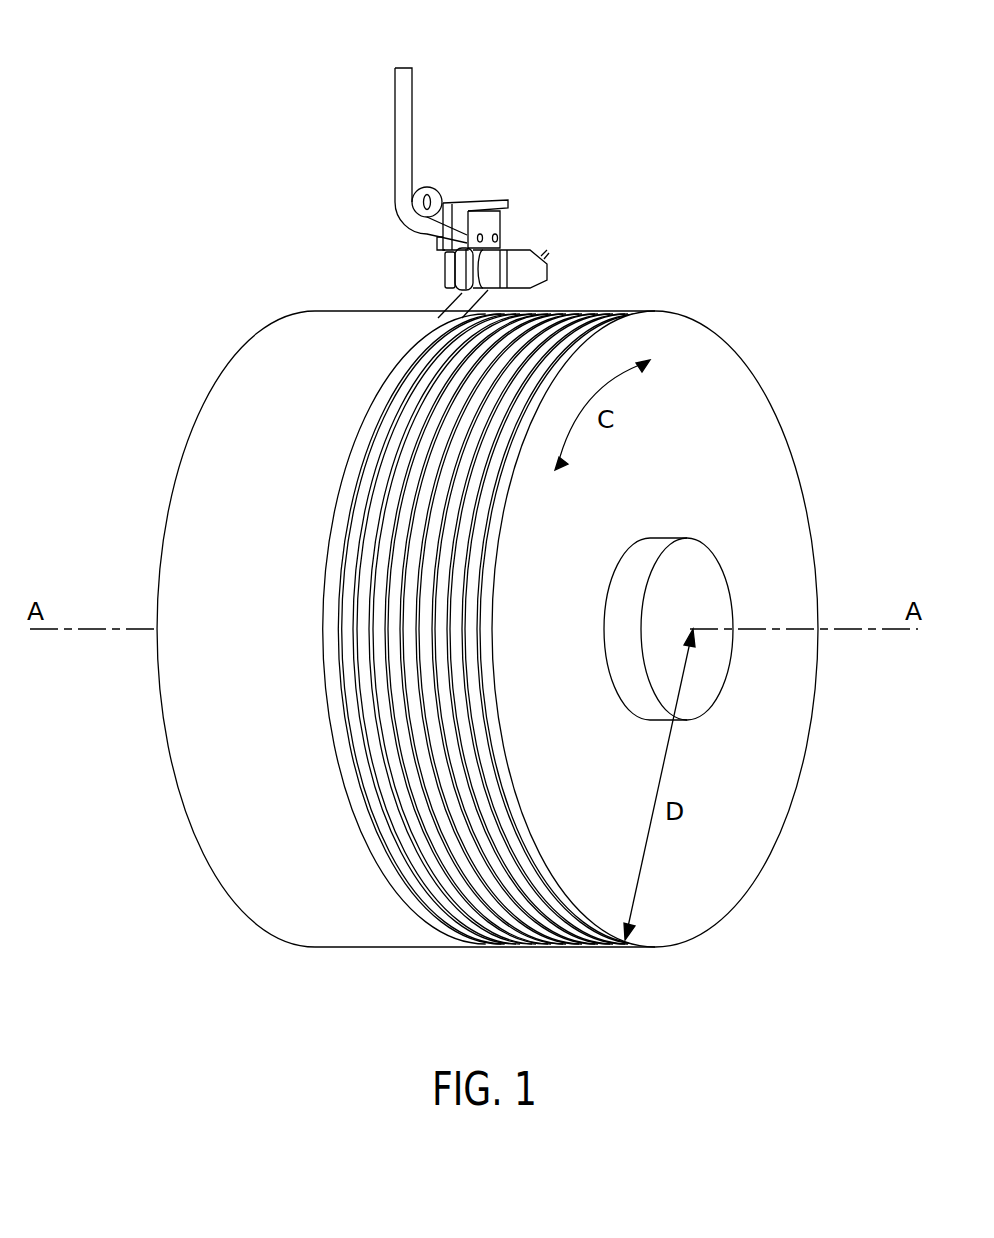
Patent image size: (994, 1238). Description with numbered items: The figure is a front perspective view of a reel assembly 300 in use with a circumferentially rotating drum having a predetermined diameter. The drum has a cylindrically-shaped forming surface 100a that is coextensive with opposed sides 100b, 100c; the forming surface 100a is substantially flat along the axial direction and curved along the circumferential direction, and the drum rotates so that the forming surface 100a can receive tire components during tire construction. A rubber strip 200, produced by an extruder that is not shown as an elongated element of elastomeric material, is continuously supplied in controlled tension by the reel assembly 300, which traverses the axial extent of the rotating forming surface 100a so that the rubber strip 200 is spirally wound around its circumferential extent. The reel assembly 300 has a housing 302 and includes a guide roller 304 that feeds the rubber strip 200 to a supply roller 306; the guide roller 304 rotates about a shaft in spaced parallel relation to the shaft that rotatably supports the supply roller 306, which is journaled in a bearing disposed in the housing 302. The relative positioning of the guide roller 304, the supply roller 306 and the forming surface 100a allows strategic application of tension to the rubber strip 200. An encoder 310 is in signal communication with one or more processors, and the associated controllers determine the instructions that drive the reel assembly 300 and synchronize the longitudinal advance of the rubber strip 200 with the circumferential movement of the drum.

The forming surface 100a is at (270, 570).
The opposed side 100b is at (170, 493).
The opposed side 100c is at (780, 503).
The rubber strip 200 is at (400, 92).
The reel assembly 300 is at (508, 187).
The housing 302 is at (493, 220).
The guide roller 304 is at (430, 185).
The supply roller 306 is at (460, 270).
The encoder 310 is at (530, 265).